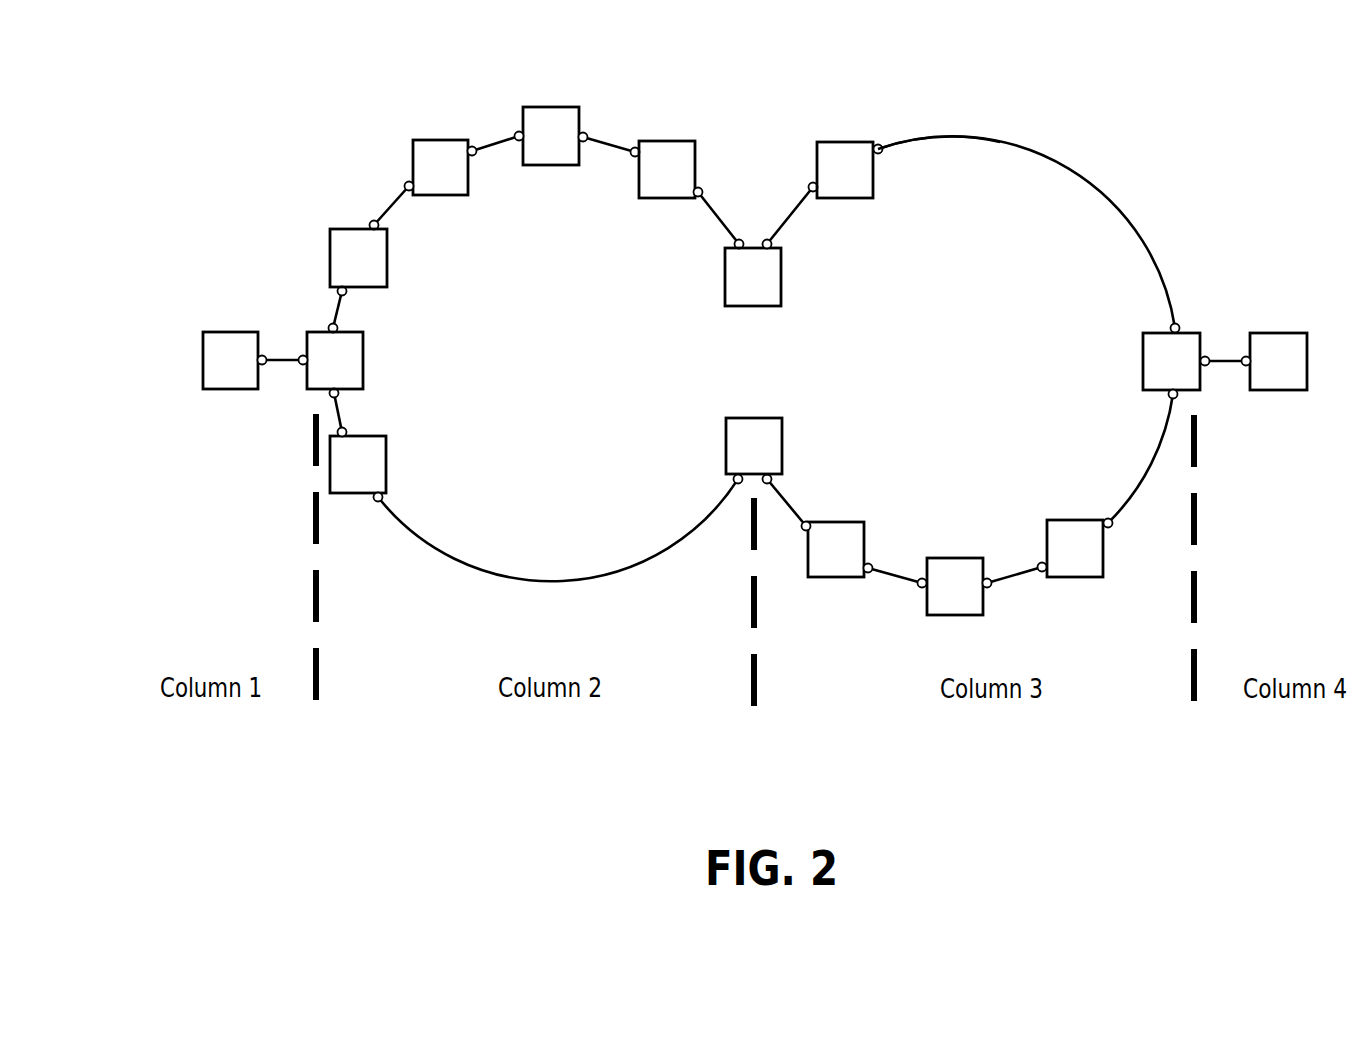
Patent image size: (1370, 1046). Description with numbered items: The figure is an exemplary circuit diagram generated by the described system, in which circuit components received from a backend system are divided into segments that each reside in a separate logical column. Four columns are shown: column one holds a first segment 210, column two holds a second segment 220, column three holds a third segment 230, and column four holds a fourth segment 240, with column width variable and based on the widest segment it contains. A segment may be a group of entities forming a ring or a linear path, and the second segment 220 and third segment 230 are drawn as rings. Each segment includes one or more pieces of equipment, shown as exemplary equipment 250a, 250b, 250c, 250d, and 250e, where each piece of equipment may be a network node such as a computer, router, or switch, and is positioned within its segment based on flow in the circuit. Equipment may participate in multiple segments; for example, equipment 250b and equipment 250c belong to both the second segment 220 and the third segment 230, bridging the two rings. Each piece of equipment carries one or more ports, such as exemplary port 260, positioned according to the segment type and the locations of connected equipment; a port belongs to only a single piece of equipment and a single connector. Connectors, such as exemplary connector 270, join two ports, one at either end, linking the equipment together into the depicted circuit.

The first segment 210 is at (216, 268).
The second segment 220 is at (424, 98).
The third segment 230 is at (1033, 98).
The fourth segment 240 is at (1288, 268).
The equipment 250a is at (671, 141).
The equipment 250b is at (725, 278).
The equipment 250c is at (726, 442).
The equipment 250d is at (363, 360).
The equipment 250e is at (387, 262).
The port 260 is at (702, 189).
The connector 270 is at (935, 137).